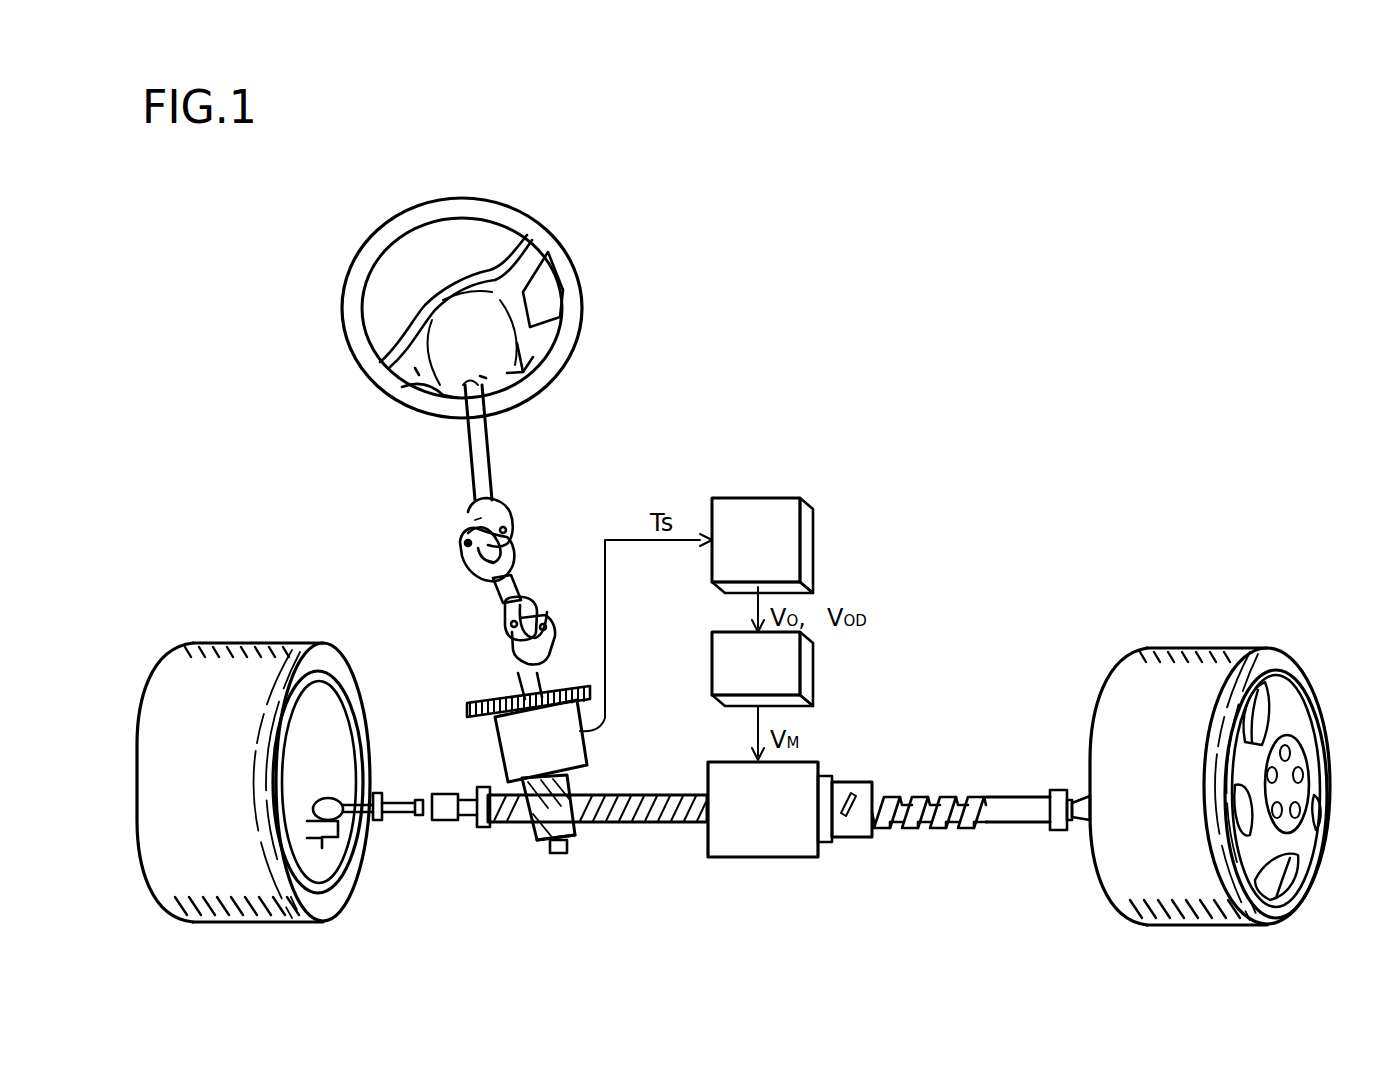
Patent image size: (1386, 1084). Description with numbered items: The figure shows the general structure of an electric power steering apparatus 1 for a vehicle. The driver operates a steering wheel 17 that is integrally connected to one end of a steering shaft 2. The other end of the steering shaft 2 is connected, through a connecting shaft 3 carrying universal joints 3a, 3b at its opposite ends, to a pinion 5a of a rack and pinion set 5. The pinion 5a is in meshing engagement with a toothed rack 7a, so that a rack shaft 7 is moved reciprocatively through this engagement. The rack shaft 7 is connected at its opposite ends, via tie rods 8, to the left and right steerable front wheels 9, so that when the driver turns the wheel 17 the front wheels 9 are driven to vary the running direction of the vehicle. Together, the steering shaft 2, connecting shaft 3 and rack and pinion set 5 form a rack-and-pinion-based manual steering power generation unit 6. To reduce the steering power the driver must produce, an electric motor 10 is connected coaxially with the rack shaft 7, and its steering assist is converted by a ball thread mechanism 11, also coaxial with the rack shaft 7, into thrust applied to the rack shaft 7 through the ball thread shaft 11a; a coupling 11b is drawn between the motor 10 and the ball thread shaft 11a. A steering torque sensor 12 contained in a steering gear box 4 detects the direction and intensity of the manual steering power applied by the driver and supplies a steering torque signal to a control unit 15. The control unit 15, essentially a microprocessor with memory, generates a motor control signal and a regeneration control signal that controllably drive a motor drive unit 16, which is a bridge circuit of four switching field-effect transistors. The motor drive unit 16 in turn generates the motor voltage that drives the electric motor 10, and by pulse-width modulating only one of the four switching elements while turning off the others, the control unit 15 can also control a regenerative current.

The electric power steering apparatus 1 is at (830, 305).
The steering shaft 2 is at (472, 468).
The connecting shaft 3 is at (508, 582).
The universal joint 3a is at (500, 513).
The universal joint 3b is at (507, 617).
The steering gear box 4 is at (528, 842).
The rack and pinion set 5 is at (490, 824).
The pinion 5a is at (573, 838).
The manual steering power generation unit 6 is at (450, 545).
The rack shaft 7 is at (1033, 840).
The toothed rack 7a is at (598, 822).
The tie rod 8 is at (347, 807).
The steerable front wheel 9 is at (240, 643).
The electric motor 10 is at (763, 843).
The ball thread mechanism 11 is at (937, 776).
The ball thread shaft 11a is at (935, 840).
The coupling 11b is at (848, 840).
The steering torque sensor 12 is at (498, 758).
The control unit 15 is at (757, 498).
The motor drive unit 16 is at (807, 673).
The steering wheel 17 is at (583, 318).